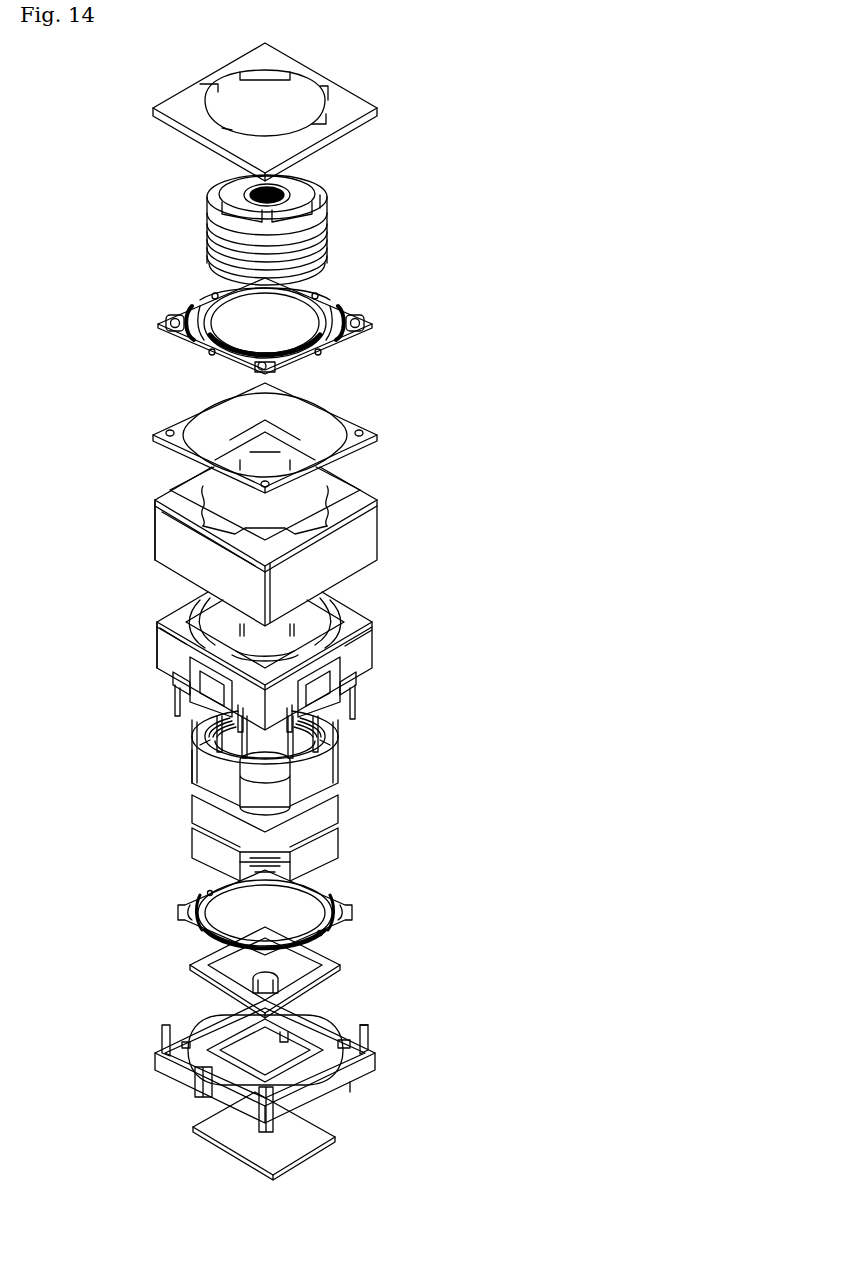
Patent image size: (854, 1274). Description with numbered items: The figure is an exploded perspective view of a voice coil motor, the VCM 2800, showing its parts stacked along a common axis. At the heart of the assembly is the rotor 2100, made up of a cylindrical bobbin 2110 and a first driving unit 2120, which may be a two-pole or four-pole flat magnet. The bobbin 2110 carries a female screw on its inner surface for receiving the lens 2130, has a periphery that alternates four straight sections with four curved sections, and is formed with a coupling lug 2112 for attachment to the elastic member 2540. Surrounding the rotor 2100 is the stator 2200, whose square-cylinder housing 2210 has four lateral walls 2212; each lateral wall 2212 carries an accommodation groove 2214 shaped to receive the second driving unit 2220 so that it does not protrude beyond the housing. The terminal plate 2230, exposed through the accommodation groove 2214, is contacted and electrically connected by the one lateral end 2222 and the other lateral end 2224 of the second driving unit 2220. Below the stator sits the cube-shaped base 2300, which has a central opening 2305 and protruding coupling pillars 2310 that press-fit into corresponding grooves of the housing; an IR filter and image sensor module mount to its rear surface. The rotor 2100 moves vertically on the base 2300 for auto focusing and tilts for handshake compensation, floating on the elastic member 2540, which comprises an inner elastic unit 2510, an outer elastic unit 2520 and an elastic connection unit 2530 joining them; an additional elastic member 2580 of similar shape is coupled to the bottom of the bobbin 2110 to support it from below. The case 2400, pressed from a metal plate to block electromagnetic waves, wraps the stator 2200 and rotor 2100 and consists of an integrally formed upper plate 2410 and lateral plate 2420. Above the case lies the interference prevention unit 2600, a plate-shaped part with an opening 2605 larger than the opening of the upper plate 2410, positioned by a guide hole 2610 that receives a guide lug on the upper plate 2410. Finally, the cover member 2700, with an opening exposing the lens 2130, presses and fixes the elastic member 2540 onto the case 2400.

The cover member 2700 is at (341, 94).
The VCM 2800 is at (352, 203).
The lens 2130 is at (228, 189).
The elastic member 2540 is at (377, 321).
The inner elastic unit 2510 is at (340, 303).
The outer elastic unit 2520 is at (187, 345).
The elastic connection unit 2530 is at (185, 307).
The interference prevention unit 2600 is at (353, 409).
The opening 2605 is at (230, 428).
The guide hole 2610 is at (153, 434).
The case 2400 is at (393, 512).
The upper plate 2410 is at (155, 500).
The lateral plate 2420 is at (185, 550).
The stator 2200 is at (377, 623).
The housing 2210 is at (173, 662).
The lateral wall 2212 is at (163, 644).
The accommodation groove 2214 is at (345, 668).
The second driving unit 2220 is at (350, 672).
The one lateral end 2222 is at (178, 682).
The other lateral end 2224 is at (208, 742).
The terminal plate 2230 is at (357, 707).
The rotor 2100 is at (343, 803).
The bobbin 2110 is at (191, 778).
The coupling lug 2112 is at (200, 752).
The first driving unit 2120 is at (333, 844).
The additional elastic member 2580 is at (175, 908).
The opening 2305 is at (236, 1050).
The coupling pillar 2310 is at (372, 1025).
The base 2300 is at (383, 1068).